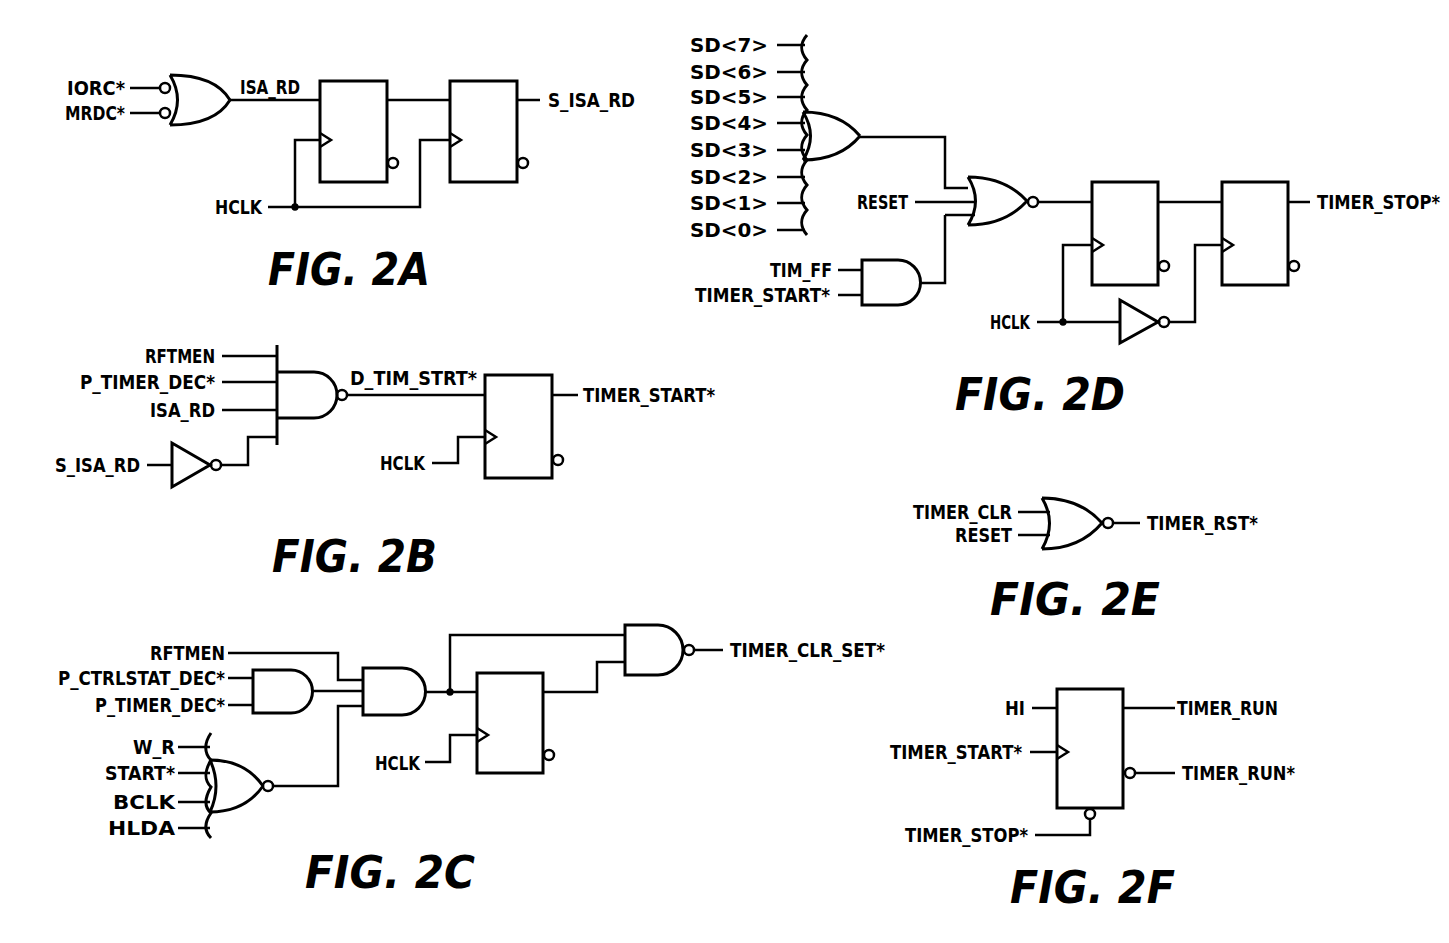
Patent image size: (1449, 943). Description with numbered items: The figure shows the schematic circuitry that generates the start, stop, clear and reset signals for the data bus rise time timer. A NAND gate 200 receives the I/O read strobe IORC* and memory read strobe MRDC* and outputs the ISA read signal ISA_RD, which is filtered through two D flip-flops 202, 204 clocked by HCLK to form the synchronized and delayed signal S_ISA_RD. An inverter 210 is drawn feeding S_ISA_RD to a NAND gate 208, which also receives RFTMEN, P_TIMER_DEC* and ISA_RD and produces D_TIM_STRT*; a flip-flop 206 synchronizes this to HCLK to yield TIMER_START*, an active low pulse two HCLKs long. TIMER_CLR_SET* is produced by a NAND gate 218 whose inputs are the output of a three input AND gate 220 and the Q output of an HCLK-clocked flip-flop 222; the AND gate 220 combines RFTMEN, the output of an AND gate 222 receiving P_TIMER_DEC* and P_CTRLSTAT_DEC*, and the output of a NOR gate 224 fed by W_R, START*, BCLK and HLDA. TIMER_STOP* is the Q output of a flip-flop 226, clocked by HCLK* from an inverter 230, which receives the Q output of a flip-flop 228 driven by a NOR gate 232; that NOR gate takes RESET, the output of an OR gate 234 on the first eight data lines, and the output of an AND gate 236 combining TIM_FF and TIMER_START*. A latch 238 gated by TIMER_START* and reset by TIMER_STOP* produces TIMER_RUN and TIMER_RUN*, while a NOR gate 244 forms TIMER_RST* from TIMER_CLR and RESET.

In FIG. 2A, the NAND gate 200 is at (193, 76).
In FIG. 2A, the D flip-flop 202 is at (372, 81).
In FIG. 2A, the D flip-flop 204 is at (502, 81).
In FIG. 2B, the flip-flop 206 is at (537, 375).
In FIG. 2B, the NAND gate 208 is at (312, 372).
In FIG. 2B, the inverter 210 is at (185, 487).
In FIG. 2C, the NAND gate 218 is at (650, 625).
In FIG. 2C, the three input AND gate 220 is at (393, 668).
In FIG. 2C, the flip-flop / AND gate 222 is at (265, 713).
In FIG. 2C, the NOR gate 224 is at (235, 812).
In FIG. 2D, the flip-flop 226 is at (1270, 182).
In FIG. 2D, the flip-flop 228 is at (1140, 182).
In FIG. 2D, the inverter 230 is at (1140, 343).
In FIG. 2D, the NOR gate 232 is at (985, 177).
In FIG. 2D, the OR gate 234 is at (832, 112).
In FIG. 2D, the AND gate 236 is at (875, 305).
In FIG. 2F, the latch 238 is at (1112, 689).
In FIG. 2E, the NOR gate 244 is at (1075, 498).